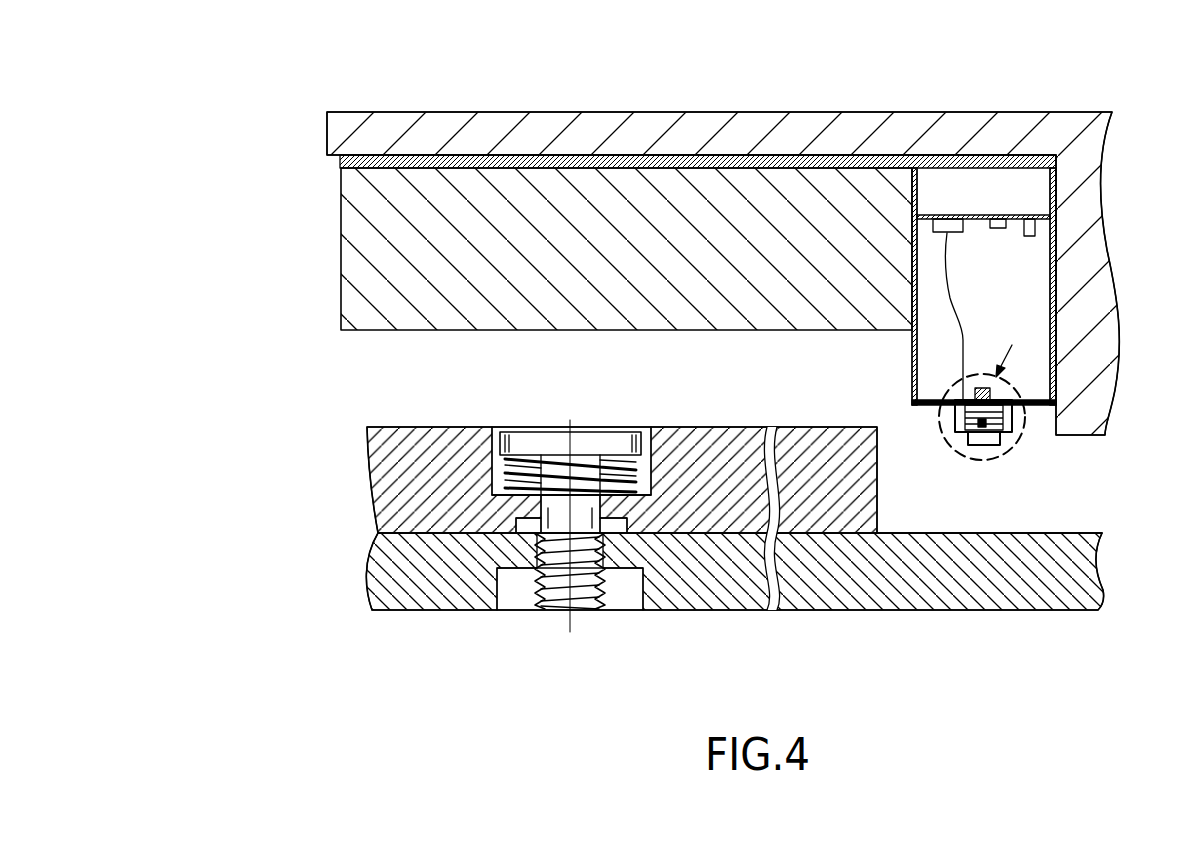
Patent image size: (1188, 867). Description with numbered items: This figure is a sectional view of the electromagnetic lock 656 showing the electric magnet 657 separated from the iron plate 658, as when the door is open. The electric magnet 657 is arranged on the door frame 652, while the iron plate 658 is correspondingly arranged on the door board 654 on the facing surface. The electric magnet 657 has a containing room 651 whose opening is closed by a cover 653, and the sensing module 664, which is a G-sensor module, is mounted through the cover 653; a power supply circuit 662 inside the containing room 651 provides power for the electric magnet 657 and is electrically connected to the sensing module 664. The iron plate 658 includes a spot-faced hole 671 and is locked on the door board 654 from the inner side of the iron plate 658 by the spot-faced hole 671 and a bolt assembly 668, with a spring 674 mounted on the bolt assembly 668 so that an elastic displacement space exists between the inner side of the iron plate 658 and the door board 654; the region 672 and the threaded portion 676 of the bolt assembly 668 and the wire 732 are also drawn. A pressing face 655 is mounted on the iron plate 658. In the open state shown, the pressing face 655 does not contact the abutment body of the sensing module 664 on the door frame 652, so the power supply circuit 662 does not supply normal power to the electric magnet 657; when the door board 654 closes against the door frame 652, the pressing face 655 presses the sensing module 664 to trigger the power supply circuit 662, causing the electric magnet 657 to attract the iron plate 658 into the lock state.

The containing room 651 is at (1037, 290).
The door frame 652 is at (1057, 153).
The cover 653 is at (1040, 410).
The door board 654 is at (1087, 575).
The pressing face 655 is at (1017, 533).
The electromagnetic lock 656 is at (256, 315).
The electric magnet 657 is at (352, 316).
The iron plate 658 is at (407, 433).
The power supply circuit 662 is at (985, 215).
The sensing module 664 is at (1023, 407).
The bolt assembly 668 is at (570, 520).
The spot-faced hole 671 is at (643, 472).
The pocket 672 is at (495, 443).
The spring 674 is at (498, 495).
The threaded portion 676 is at (562, 575).
The wire 732 is at (912, 266).